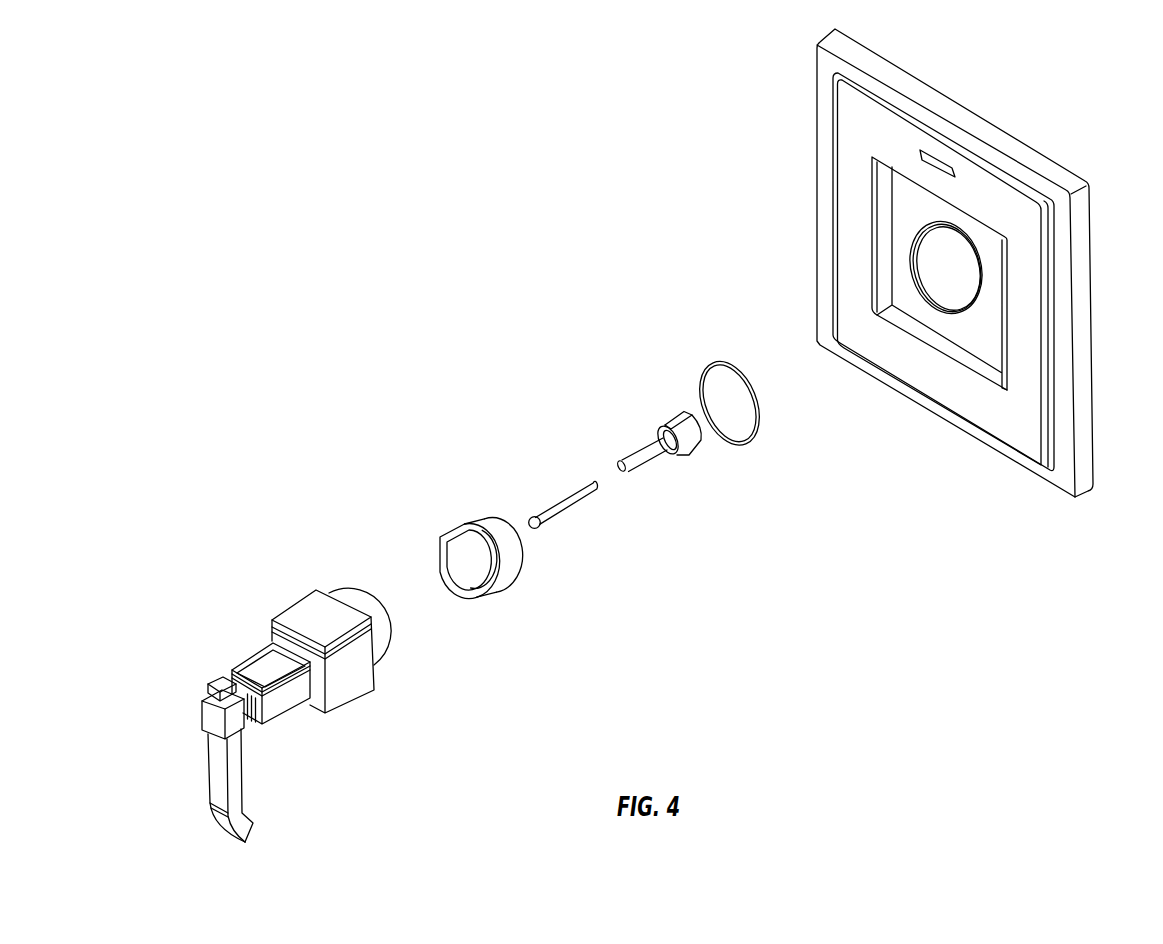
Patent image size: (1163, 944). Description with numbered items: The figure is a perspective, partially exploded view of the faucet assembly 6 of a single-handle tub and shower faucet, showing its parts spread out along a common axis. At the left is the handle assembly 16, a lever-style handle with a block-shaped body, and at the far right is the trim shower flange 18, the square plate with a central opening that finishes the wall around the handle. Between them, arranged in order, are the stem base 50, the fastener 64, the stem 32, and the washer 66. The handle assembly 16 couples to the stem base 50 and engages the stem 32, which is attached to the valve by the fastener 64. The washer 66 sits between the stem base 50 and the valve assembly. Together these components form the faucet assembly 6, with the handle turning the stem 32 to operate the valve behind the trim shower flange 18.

The faucet assembly 6 is at (513, 370).
The handle assembly 16 is at (376, 675).
The trim shower flange 18 is at (1093, 331).
The stem 32 is at (679, 456).
The stem base 50 is at (506, 589).
The fastener 64 is at (575, 505).
The washer 66 is at (752, 444).